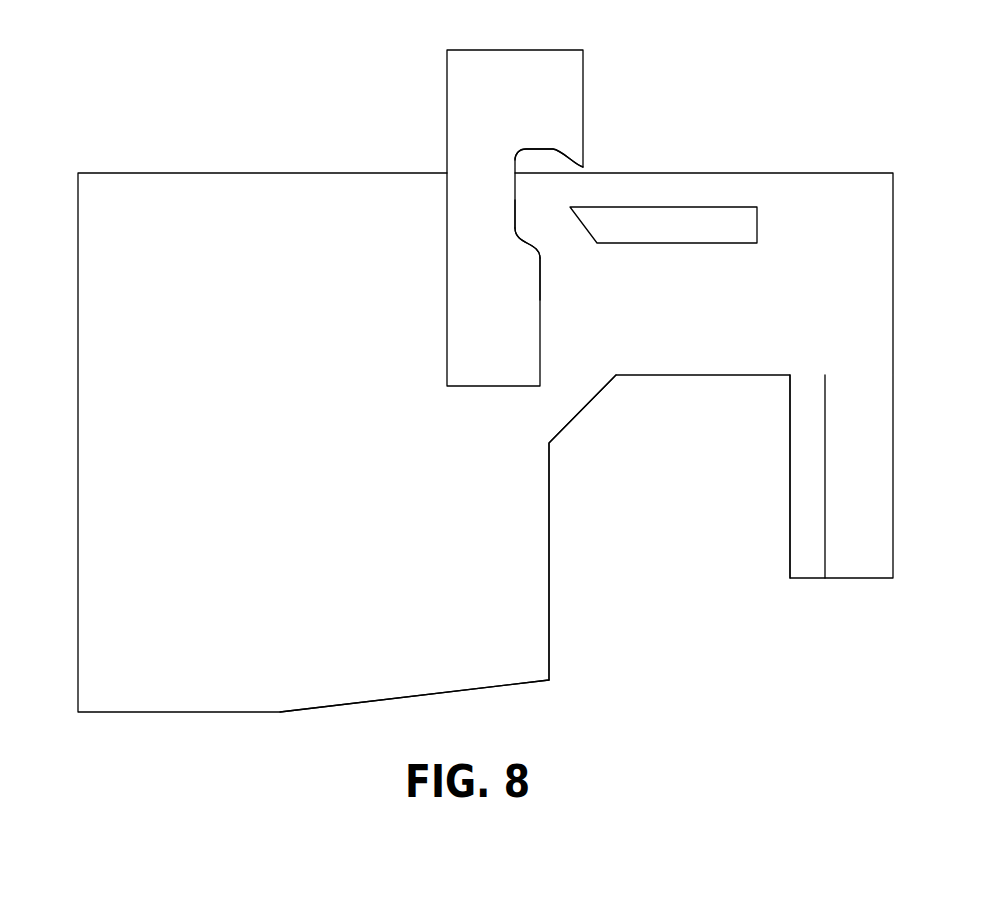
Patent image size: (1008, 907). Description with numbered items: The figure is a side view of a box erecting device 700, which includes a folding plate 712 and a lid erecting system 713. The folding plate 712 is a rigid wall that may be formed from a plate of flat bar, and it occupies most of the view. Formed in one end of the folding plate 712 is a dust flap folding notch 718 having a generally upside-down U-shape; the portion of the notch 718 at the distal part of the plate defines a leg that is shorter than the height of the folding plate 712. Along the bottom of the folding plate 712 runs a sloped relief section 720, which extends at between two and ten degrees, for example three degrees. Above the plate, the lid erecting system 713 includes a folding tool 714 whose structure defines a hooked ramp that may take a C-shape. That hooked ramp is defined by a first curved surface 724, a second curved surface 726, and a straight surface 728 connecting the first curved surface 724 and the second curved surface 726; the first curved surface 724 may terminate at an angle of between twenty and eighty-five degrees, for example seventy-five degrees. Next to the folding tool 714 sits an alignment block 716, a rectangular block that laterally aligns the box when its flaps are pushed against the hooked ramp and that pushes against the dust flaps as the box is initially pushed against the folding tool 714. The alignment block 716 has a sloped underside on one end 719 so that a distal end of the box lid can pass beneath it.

The box erecting device 700 is at (138, 61).
The folding plate 712 is at (153, 452).
The lid erecting system 713 is at (640, 39).
The folding tool 714 is at (480, 60).
The alignment block 716 is at (670, 234).
The dust flap folding notch 718 is at (549, 530).
The end with sloped underside 719 is at (577, 216).
The sloped relief section 720 is at (392, 678).
The first curved surface 724 is at (542, 149).
The second curved surface 726 is at (528, 250).
The straight surface 728 is at (519, 213).